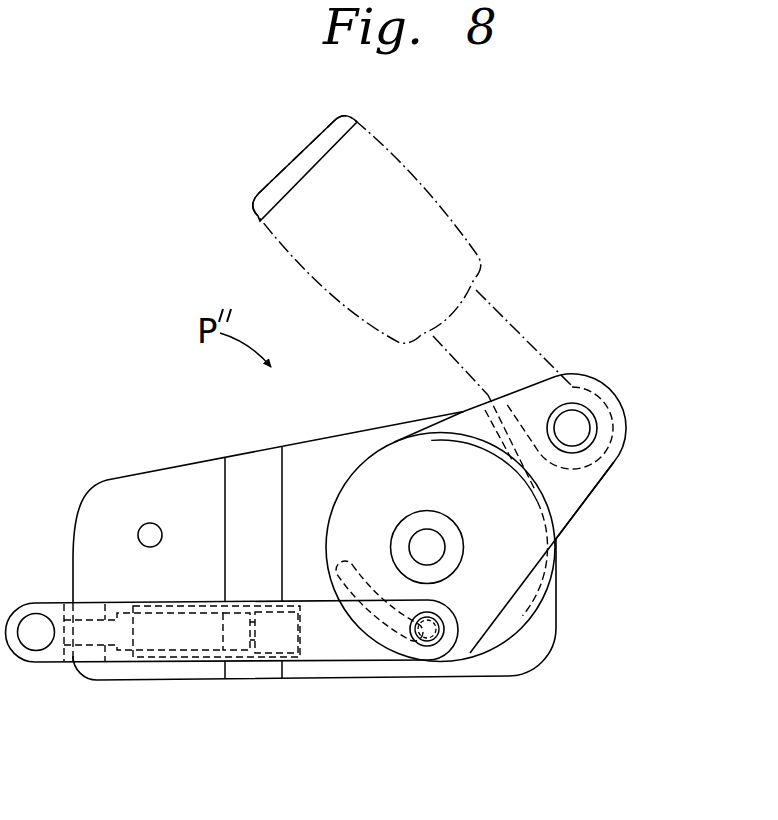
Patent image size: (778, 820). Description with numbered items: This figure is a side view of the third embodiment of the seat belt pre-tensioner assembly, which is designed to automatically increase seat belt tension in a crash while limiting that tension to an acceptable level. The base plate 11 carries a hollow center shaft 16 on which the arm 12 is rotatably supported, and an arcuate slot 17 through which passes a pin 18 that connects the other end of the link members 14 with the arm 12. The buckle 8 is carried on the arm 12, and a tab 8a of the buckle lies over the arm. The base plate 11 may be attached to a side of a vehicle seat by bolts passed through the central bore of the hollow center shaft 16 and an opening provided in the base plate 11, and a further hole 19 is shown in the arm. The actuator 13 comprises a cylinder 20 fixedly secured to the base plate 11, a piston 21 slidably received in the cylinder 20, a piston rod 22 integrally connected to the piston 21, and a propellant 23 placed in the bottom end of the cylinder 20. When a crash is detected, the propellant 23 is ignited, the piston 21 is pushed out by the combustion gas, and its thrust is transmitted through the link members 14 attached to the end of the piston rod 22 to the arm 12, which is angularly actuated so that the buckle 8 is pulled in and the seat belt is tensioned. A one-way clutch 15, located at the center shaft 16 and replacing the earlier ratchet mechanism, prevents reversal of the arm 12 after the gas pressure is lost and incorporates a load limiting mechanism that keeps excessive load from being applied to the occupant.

The buckle 8 is at (410, 167).
The buckle base tab 8a is at (595, 466).
The base plate 11 is at (334, 374).
The arm 12 is at (397, 485).
The actuator 13 is at (170, 667).
The link members 14 is at (315, 655).
The one-way clutch 15 is at (483, 466).
The hollow center shaft 16 is at (462, 533).
The arcuate slot 17 is at (387, 628).
The pin 18 is at (443, 636).
The pivot hole 19 is at (592, 430).
The cylinder 20 is at (198, 603).
The piston 21 is at (238, 650).
The piston rod 22 is at (84, 620).
The propellant 23 is at (273, 652).